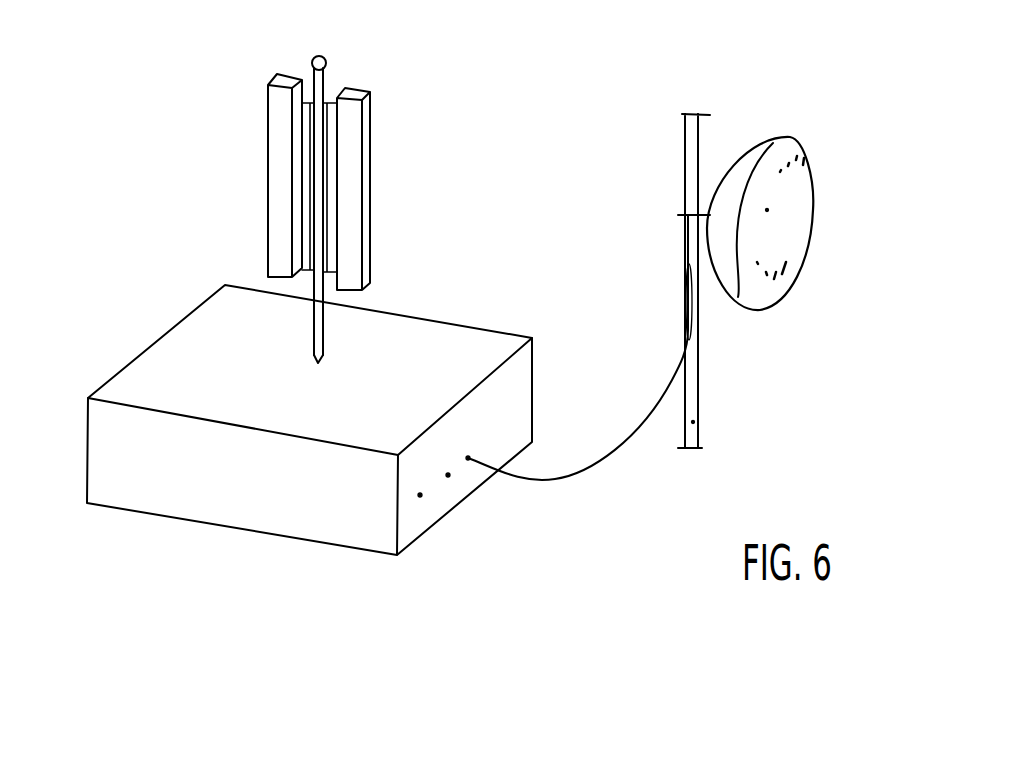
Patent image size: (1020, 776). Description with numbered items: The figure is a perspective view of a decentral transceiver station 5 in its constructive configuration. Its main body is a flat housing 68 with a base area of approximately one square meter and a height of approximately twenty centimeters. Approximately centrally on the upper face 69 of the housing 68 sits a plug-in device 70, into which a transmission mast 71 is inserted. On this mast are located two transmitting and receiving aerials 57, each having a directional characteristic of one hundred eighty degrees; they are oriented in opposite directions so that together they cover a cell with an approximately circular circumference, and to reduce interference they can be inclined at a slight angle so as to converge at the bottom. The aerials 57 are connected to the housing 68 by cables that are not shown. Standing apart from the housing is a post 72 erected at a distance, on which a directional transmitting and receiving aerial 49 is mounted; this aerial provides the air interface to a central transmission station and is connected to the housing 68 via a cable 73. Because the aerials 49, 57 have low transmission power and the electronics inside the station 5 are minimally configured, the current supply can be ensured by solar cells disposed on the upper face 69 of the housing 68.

The decentral transceiver station 5 is at (309, 302).
The directional transmitting and receiving aerial 49 is at (788, 224).
The transmitting and receiving aerials 57 is at (270, 150).
The flat housing 68 is at (309, 409).
The upper face 69 is at (412, 335).
The plug-in device 70 is at (311, 362).
The transmission mast 71 is at (337, 226).
The pole 72 is at (702, 422).
The cable 73 is at (582, 475).